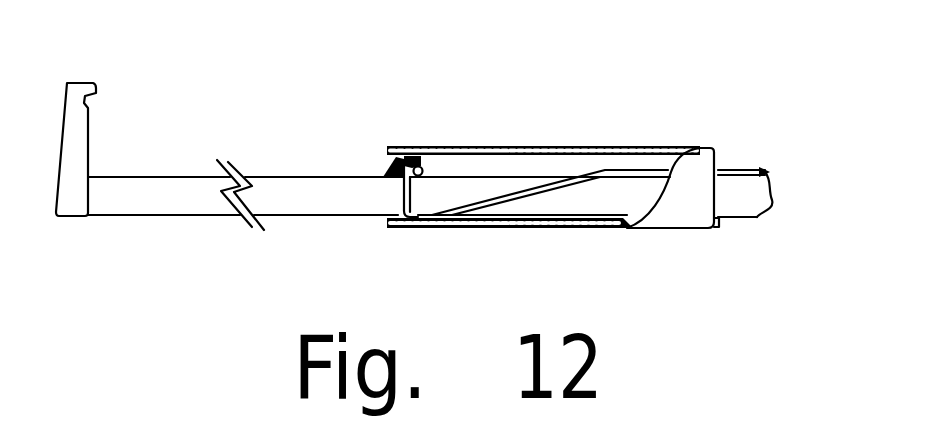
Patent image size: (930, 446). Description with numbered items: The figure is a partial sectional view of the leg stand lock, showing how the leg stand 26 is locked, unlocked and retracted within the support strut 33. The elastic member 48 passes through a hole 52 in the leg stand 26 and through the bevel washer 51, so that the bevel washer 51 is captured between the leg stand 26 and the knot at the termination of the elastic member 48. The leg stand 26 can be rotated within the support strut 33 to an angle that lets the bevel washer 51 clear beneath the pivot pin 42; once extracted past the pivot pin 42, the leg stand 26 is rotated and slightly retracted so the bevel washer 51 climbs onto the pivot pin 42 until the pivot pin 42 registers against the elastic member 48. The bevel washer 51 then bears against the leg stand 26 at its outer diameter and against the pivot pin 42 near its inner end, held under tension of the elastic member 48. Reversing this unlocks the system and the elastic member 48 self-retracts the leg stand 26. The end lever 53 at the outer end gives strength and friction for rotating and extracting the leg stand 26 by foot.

The end lever 53 is at (72, 85).
The leg stand 26 is at (108, 207).
The support strut 33 is at (528, 252).
The elastic member 48 is at (440, 196).
The bevel washer 51 is at (372, 155).
The pivot pin 42 is at (446, 160).
The hole 52 is at (374, 198).